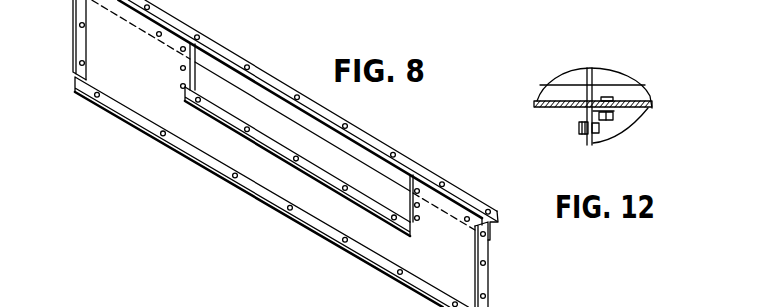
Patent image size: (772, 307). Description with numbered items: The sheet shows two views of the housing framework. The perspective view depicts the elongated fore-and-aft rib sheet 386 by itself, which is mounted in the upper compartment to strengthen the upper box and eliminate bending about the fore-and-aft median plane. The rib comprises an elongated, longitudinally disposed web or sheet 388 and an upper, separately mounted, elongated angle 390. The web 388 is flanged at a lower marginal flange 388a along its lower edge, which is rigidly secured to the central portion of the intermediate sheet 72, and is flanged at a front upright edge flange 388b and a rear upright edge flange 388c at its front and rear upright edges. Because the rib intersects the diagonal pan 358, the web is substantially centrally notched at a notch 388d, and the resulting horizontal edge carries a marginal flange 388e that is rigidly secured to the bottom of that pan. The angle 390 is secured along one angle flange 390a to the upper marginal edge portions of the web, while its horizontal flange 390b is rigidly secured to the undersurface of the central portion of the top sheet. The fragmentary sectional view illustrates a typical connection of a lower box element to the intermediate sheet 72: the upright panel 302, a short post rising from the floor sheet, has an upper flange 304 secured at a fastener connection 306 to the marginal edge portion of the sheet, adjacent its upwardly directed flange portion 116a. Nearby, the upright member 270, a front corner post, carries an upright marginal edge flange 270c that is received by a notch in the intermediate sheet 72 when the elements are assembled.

In FIG. 8, the rib sheet 386 is at (112, 120).
In FIG. 8, the web or sheet 388 is at (222, 148).
In FIG. 8, the lower marginal flange 388a is at (268, 200).
In FIG. 8, the front upright edge flange 388b is at (73, 9).
In FIG. 8, the rear upright edge flange 388c is at (489, 284).
In FIG. 8, the notch 388d is at (338, 179).
In FIG. 8, the marginal flange 388e is at (380, 209).
In FIG. 8, the angle 390 is at (226, 49).
In FIG. 8, the angle flange 390a is at (257, 83).
In FIG. 8, the horizontal flange 390b is at (363, 137).
In FIG. 12, the diagonal pan 358 is at (490, 0).
In FIG. 12, the upright member 270 is at (630, 77).
In FIG. 12, the upright marginal edge flange 270c is at (587, 139).
In FIG. 12, the intermediate sheet 72 is at (545, 108).
In FIG. 12, the flange portion 116a is at (545, 95).
In FIG. 12, the panel 302 is at (596, 141).
In FIG. 12, the upper flange 304 is at (615, 113).
In FIG. 12, the fastener connection 306 is at (605, 99).